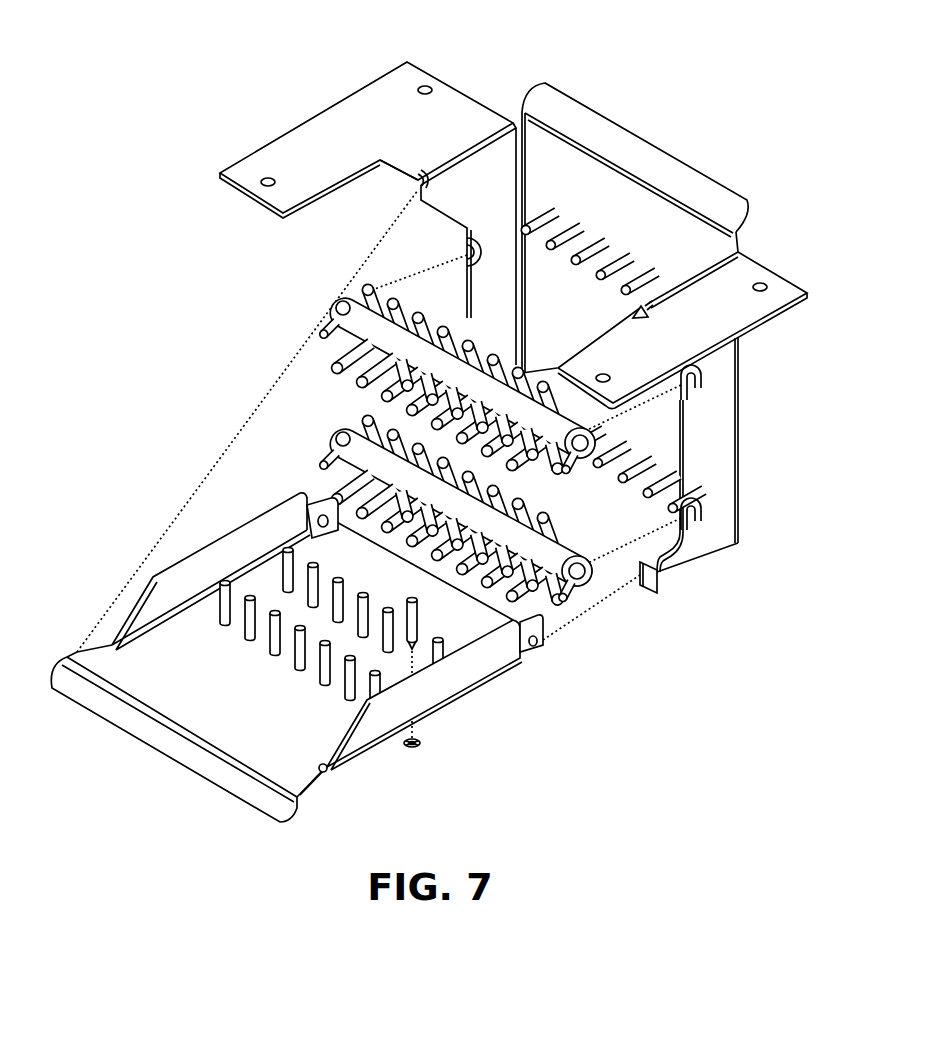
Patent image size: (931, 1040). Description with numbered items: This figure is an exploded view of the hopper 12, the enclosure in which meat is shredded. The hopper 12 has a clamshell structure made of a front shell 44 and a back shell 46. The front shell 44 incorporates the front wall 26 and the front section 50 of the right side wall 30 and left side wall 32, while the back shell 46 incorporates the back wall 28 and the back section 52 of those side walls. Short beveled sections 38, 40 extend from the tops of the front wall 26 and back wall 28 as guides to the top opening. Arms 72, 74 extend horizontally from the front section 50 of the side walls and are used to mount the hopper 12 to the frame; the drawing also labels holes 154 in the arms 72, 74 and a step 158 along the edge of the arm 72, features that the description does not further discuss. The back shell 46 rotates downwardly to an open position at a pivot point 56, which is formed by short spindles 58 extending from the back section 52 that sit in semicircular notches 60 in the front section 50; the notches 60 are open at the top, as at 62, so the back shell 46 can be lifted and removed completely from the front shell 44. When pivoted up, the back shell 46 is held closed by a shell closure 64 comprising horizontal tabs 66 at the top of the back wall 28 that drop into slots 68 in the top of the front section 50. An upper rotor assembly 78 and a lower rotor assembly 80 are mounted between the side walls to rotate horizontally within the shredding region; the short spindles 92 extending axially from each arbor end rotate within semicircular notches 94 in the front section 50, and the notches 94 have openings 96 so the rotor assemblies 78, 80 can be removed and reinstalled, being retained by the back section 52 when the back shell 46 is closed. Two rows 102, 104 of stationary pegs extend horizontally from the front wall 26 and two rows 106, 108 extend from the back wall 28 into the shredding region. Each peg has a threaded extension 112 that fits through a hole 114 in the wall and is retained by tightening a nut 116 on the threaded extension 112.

The hopper 12 is at (368, 114).
The arm 72 is at (316, 115).
The step edge of top plate 158 is at (396, 172).
The mounting holes 154 is at (432, 88).
The right side wall 30 is at (488, 174).
The slot 68 is at (423, 175).
The semicircular notch 94 is at (481, 243).
The opening 96 is at (466, 248).
The beveled section 38 is at (624, 127).
The front wall 26 is at (583, 190).
The row of pegs 102 is at (626, 238).
The arm 74 is at (776, 317).
The front shell 44 is at (742, 449).
The left side wall 32 is at (711, 457).
The front section of the side walls 50 is at (703, 561).
The open top of notch 62 is at (656, 566).
The semicircular notch 60 is at (657, 586).
The row of pegs 106 is at (643, 446).
The shell closure 64 is at (271, 391).
The pivot point 56 is at (603, 600).
The upper rotor assembly 78 is at (346, 352).
The lower rotor assembly 80 is at (352, 428).
The spindle 92 is at (336, 305).
The back section of the side walls 52 is at (244, 526).
The back wall 28 is at (162, 685).
The row of pegs 108 is at (357, 588).
The hole 114 is at (410, 653).
The threaded extension 112 is at (416, 639).
The nut 116 is at (421, 744).
The row of pegs 104 is at (283, 661).
The back shell 46 is at (488, 683).
The beveled section 40 is at (160, 757).
The horizontal tab 66 is at (78, 650).
The spindle 58 is at (316, 503).